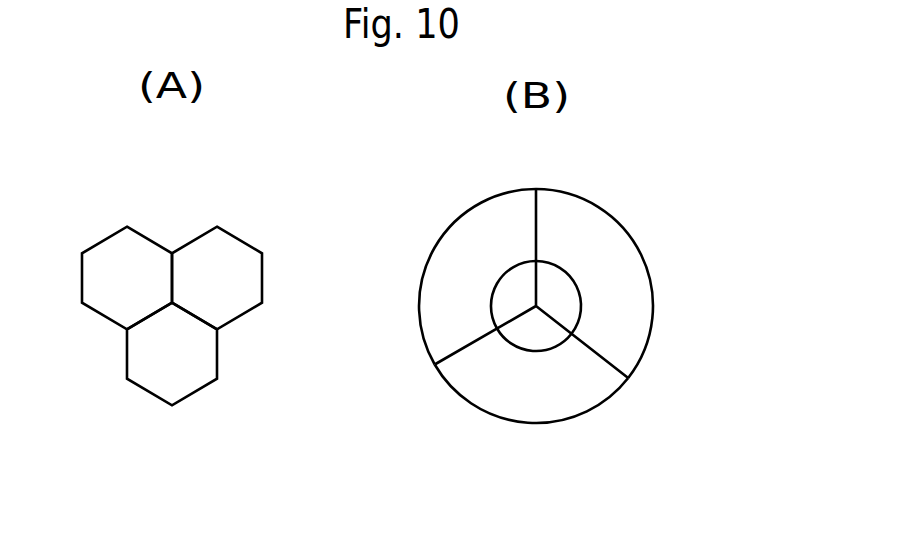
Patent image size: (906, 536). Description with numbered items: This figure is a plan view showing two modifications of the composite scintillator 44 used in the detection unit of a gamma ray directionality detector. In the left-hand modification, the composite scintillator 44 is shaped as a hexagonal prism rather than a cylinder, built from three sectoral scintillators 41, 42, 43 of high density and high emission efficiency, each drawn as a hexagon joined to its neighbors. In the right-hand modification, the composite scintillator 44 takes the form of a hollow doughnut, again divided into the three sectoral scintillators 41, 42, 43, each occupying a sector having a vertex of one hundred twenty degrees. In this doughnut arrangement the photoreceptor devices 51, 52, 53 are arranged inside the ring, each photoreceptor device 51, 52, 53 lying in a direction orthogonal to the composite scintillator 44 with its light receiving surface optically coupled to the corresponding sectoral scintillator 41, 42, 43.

The sectoral scintillator 41 is at (148, 392).
The sectoral scintillator 42 is at (240, 237).
The sectoral scintillator 43 is at (107, 238).
The composite scintillator 44 is at (399, 293).
The photoreceptor device 51 is at (542, 342).
The photoreceptor device 52 is at (562, 295).
The photoreceptor device 53 is at (512, 288).